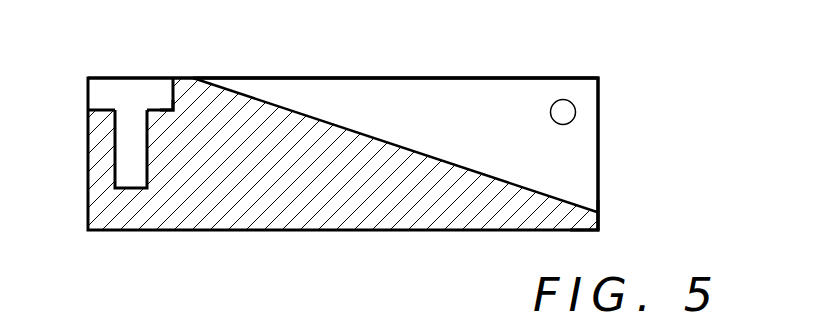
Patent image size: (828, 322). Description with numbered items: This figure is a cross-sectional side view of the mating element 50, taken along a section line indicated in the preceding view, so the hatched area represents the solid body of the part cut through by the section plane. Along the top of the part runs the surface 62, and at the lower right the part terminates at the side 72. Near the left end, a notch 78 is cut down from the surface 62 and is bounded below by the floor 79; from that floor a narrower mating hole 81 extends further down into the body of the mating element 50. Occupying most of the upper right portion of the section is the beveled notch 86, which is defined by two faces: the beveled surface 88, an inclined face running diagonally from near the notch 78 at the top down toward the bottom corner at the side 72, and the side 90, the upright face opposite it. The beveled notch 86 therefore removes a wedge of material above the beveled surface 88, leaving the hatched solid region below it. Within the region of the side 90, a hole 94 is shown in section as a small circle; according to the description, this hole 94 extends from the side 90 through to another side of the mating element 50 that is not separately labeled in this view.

The mating element 50 is at (715, 241).
The surface 62 is at (320, 77).
The side 72 is at (600, 217).
The notch 78 is at (100, 96).
The floor 79 is at (157, 110).
The mating hole 81 is at (130, 165).
The beveled notch 86 is at (422, 62).
The beveled surface 88 is at (440, 159).
The side 90 is at (527, 92).
The hole 94 is at (565, 113).